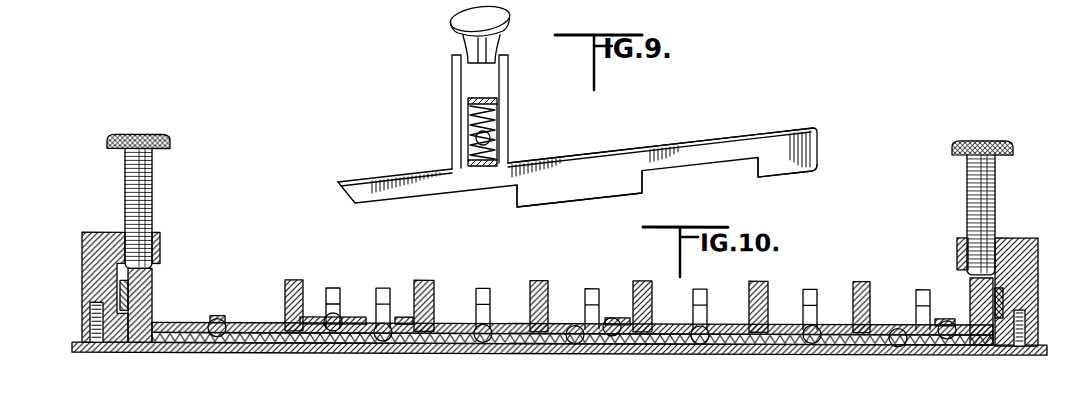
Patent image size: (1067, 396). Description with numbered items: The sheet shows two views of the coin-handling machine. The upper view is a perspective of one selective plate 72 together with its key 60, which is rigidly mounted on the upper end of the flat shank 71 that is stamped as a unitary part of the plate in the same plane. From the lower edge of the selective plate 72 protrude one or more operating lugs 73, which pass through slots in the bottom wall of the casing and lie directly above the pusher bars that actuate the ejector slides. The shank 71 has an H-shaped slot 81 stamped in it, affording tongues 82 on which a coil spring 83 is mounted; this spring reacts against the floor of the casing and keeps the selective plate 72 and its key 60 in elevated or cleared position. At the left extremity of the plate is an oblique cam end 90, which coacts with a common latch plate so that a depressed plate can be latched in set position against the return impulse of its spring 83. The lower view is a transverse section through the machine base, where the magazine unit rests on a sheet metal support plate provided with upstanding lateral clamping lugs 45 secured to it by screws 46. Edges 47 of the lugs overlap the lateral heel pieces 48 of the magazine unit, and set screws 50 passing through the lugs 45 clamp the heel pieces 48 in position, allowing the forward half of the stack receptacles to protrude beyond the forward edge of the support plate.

In FIG. 9, the knob 60 is at (480, 33).
In FIG. 9, the flat shank 71 is at (452, 72).
In FIG. 9, the selective plate 72 is at (598, 155).
In FIG. 9, the operating lugs 73 is at (630, 184).
In FIG. 9, the H-shaped slot 81 is at (500, 136).
In FIG. 9, the tongues 82 is at (500, 101).
In FIG. 9, the coil spring 83 is at (467, 138).
In FIG. 10, the coil spring 83 is at (898, 325).
In FIG. 9, the oblique cam end 90 is at (346, 192).
In FIG. 10, the lateral clamping lugs 45 is at (82, 270).
In FIG. 10, the screws 46 is at (90, 318).
In FIG. 10, the edges 47 is at (160, 245).
In FIG. 10, the lateral heel pieces 48 is at (152, 297).
In FIG. 10, the set screws 50 is at (152, 192).